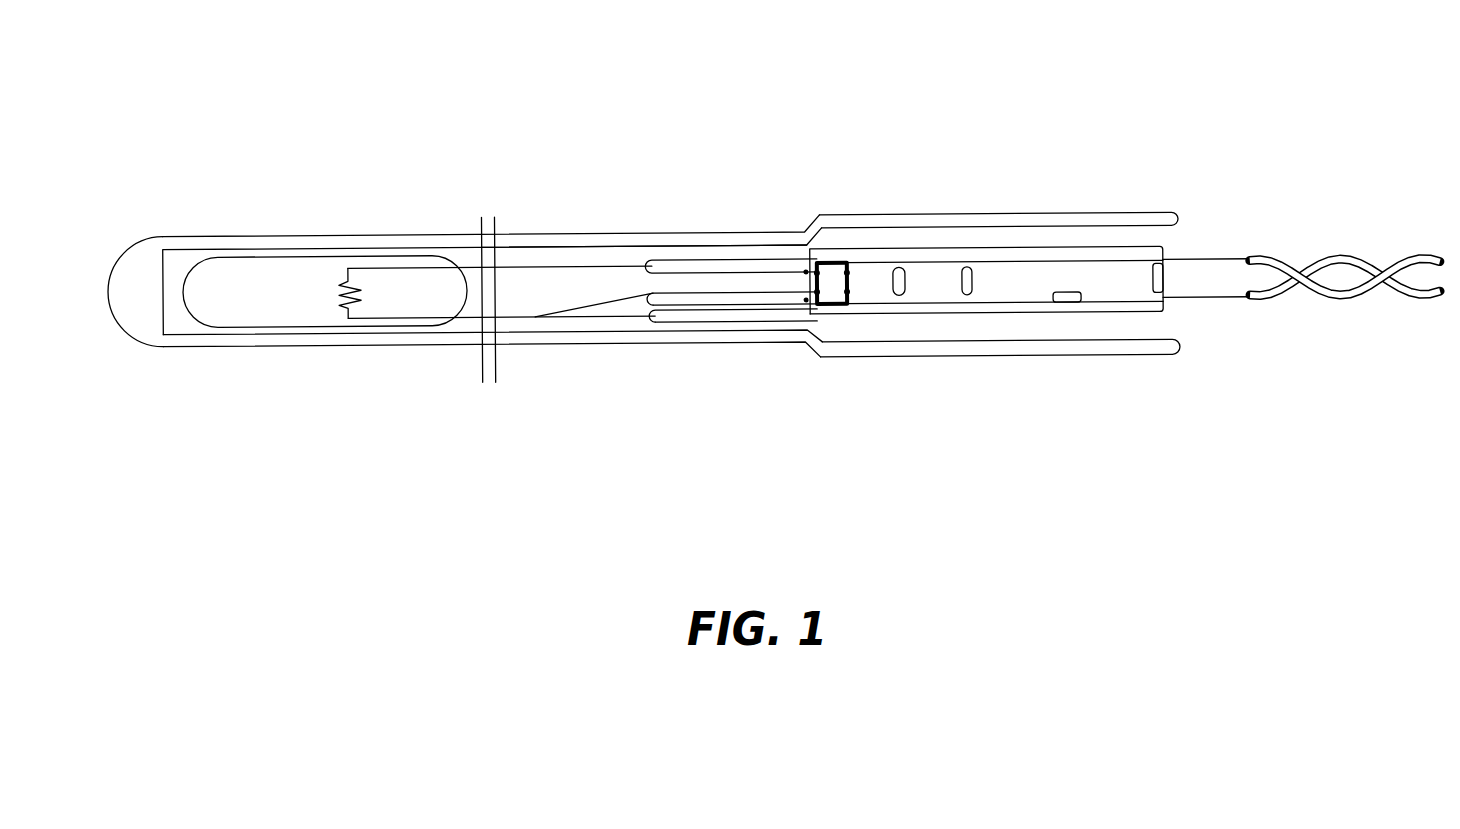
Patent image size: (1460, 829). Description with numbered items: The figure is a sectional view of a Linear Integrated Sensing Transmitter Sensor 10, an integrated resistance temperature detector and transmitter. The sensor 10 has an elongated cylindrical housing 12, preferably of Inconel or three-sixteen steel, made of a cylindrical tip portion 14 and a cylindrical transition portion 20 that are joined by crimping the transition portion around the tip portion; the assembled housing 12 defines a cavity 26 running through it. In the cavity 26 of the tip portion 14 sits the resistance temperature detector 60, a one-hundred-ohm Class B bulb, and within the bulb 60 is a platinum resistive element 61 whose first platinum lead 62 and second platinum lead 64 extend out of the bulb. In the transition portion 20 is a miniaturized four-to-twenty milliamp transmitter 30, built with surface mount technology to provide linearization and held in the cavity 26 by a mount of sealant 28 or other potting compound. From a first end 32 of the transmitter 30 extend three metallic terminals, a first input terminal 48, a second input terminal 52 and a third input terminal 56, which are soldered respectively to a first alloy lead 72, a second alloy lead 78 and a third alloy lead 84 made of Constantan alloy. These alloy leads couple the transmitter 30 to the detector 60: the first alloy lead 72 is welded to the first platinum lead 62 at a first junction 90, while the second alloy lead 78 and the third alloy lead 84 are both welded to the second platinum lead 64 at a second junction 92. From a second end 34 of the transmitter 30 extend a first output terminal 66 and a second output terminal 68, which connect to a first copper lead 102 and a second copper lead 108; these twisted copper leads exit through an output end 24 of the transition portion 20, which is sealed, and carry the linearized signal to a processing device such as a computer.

The Linear Integrated Sensing Transmitter Sensor 10 is at (722, 67).
The elongated cylindrical housing 12 is at (775, 345).
The cylindrical tip portion 14 is at (254, 360).
The cylindrical transition portion 20 is at (1062, 377).
The output end 24 is at (1179, 238).
The cavity 26 is at (514, 293).
The sealant 28 is at (181, 324).
The miniaturized transmitter 30 is at (1054, 315).
The first end of the transmitter 32 is at (803, 268).
The second end of the transmitter 34 is at (1175, 310).
The first input terminal 48 is at (708, 257).
The second input terminal 52 is at (727, 293).
The third input terminal 56 is at (752, 323).
The resistance temperature detector 60 is at (357, 330).
The platinum resistive element 61 is at (320, 294).
The first platinum lead 62 is at (468, 260).
The second platinum lead 64 is at (471, 316).
The first output terminal 66 is at (1211, 253).
The second output terminal 68 is at (1230, 301).
The first alloy lead 72 is at (580, 257).
The second alloy lead 78 is at (608, 296).
The third alloy lead 84 is at (634, 319).
The first junction 90 is at (527, 257).
The second junction 92 is at (547, 323).
The first copper lead 102 is at (1334, 252).
The second copper lead 108 is at (1340, 301).